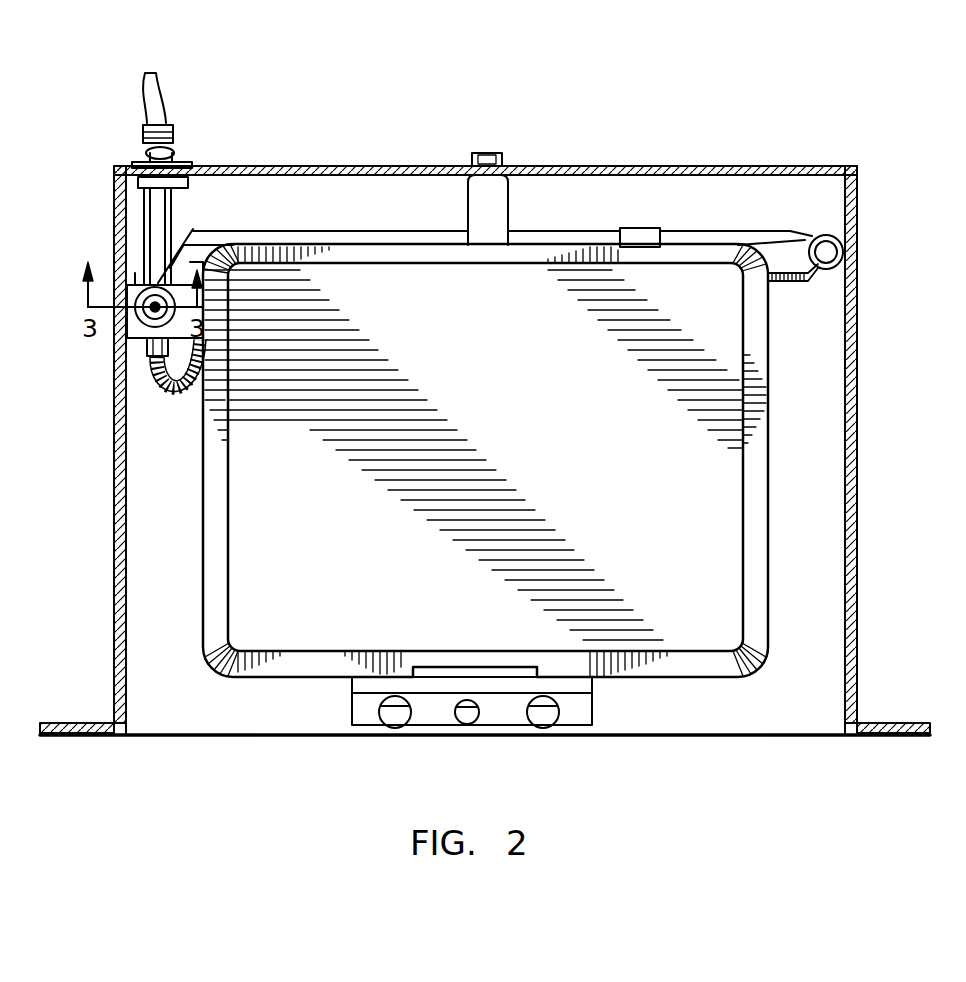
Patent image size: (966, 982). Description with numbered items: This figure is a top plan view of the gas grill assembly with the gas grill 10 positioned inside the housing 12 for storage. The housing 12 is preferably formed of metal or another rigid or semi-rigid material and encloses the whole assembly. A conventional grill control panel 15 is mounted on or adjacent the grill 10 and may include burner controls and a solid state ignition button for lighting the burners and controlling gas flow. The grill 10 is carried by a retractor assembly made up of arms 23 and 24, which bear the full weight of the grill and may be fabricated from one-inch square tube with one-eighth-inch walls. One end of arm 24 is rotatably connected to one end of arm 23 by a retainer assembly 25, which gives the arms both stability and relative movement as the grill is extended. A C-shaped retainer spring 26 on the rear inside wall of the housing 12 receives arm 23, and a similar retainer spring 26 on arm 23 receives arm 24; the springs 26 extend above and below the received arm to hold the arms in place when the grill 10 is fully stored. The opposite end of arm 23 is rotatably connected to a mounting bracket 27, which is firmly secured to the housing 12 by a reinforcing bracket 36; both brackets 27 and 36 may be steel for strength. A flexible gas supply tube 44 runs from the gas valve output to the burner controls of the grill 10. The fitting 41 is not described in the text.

The gas grill 10 is at (782, 488).
The housing 12 is at (857, 392).
The grill control panel 15 is at (590, 705).
The arm 23 is at (330, 243).
The arm 24 is at (792, 262).
The retainer assembly 25 is at (826, 252).
The retainer spring 26 is at (490, 206).
The mounting bracket 27 is at (133, 263).
The reinforcing bracket 36 is at (118, 205).
The connector fitting 41 is at (172, 150).
The flexible gas supply tube 44 is at (175, 397).